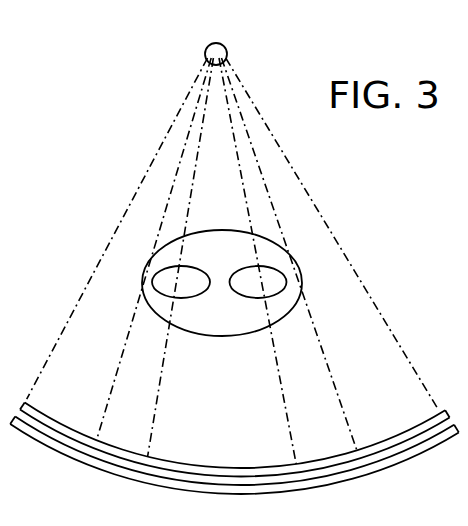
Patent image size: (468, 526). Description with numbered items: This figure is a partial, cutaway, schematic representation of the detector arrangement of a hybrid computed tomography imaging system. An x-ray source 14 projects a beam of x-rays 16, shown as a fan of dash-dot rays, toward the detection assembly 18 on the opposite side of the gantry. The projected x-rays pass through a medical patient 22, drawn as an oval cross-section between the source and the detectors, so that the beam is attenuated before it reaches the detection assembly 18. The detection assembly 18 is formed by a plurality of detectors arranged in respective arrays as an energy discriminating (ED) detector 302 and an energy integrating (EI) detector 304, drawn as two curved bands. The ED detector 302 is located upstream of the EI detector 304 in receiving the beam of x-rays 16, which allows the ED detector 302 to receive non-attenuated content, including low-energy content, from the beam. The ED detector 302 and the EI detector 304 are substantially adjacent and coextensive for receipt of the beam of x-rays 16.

The x-ray source 14 is at (208, 48).
The beam of x-rays 16 is at (118, 228).
The detection assembly 18 is at (368, 238).
The medical patient 22 is at (212, 337).
The energy discriminating (ED) detector 302 is at (414, 424).
The energy integrating (EI) detector 304 is at (80, 462).